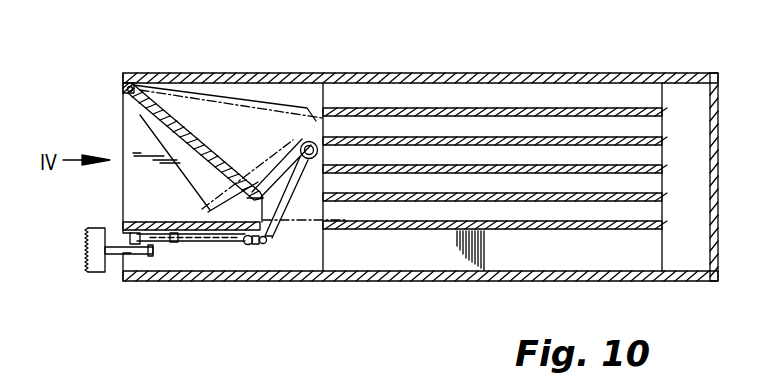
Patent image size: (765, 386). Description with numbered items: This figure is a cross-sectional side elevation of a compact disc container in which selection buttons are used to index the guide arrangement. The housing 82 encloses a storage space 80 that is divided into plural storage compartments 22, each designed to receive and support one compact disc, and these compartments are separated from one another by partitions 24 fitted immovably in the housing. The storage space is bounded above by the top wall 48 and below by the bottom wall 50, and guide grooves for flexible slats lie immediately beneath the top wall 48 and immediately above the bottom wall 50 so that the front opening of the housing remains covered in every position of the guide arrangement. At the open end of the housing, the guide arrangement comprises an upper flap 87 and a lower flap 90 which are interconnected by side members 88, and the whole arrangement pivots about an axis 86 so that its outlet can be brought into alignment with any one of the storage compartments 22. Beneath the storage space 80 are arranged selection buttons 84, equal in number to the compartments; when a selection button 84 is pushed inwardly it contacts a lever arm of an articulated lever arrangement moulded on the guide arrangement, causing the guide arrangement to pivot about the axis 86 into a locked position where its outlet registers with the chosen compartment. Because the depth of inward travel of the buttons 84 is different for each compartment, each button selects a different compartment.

The storage compartment 22 is at (353, 210).
The partition 24 is at (410, 203).
The top wall 48 is at (517, 72).
The bottom wall 50 is at (362, 279).
The storage space 80 is at (495, 150).
The housing 82 is at (420, 173).
The selection button 84 is at (97, 267).
The axis 86 is at (129, 80).
The upper flap 87 is at (214, 78).
The side member 88 is at (150, 130).
The lower flap 90 is at (275, 153).